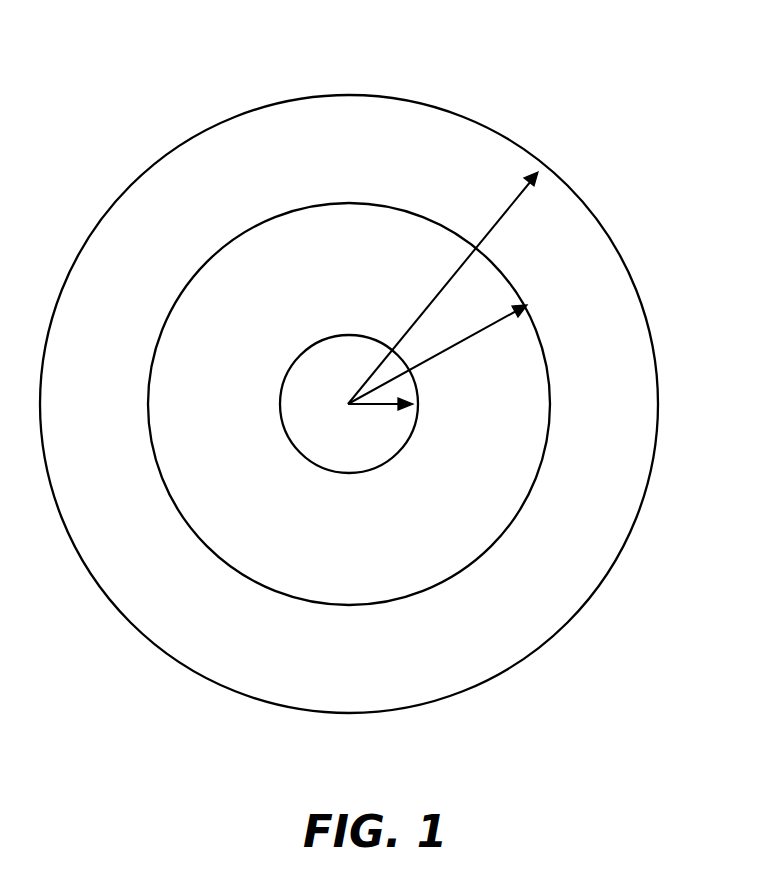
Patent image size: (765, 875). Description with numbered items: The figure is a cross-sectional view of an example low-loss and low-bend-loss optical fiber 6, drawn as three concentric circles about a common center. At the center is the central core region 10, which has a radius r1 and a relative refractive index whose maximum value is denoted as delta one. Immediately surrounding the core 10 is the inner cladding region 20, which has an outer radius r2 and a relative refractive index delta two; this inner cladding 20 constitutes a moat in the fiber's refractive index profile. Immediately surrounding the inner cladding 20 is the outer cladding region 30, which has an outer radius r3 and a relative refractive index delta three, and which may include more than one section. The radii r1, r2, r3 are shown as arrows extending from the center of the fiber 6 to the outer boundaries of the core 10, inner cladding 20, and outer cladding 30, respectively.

The optical fiber 6 is at (148, 72).
The central core region 10 is at (340, 395).
The inner cladding region 20 is at (255, 340).
The outer cladding region 30 is at (169, 238).
The core radius r1 is at (380, 408).
The inner cladding outer radius r2 is at (437, 360).
The outer cladding outer radius r3 is at (447, 282).